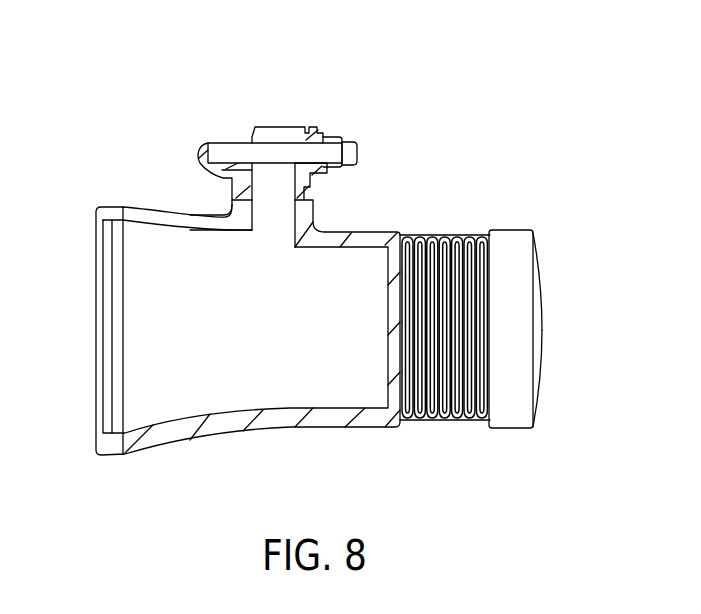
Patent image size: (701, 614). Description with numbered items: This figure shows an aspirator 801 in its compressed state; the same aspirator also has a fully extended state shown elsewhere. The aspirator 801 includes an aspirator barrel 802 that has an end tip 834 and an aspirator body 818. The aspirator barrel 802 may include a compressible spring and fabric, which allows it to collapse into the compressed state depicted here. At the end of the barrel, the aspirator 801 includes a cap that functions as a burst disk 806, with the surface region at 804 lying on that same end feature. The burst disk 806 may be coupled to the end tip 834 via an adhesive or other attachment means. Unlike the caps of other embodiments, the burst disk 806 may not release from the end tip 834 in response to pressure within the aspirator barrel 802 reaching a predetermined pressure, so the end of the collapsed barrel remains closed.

The aspirator 801 is at (367, 46).
The aspirator barrel 802 is at (448, 234).
The dome end surface 804 is at (542, 303).
The burst disk 806 is at (542, 356).
The aspirator body 818 is at (172, 213).
The end tip 834 is at (514, 230).